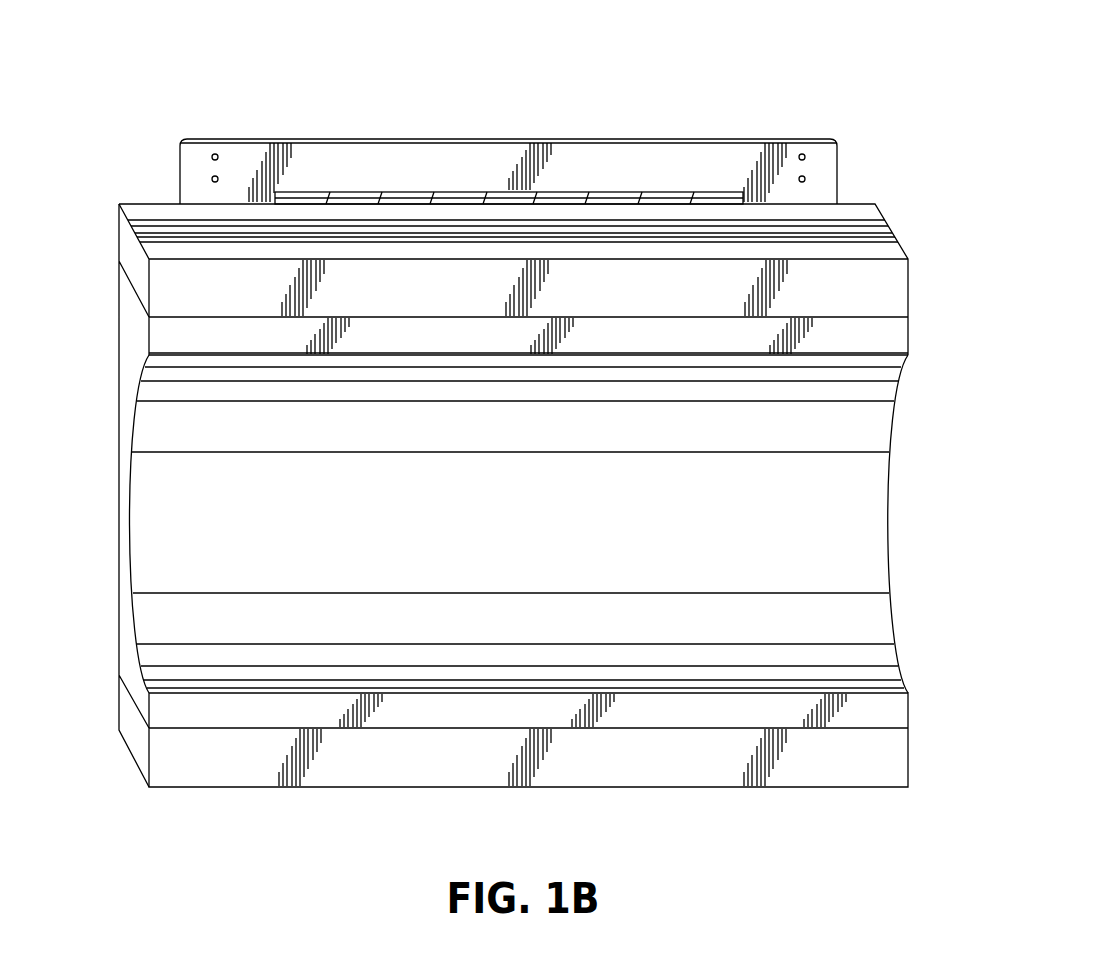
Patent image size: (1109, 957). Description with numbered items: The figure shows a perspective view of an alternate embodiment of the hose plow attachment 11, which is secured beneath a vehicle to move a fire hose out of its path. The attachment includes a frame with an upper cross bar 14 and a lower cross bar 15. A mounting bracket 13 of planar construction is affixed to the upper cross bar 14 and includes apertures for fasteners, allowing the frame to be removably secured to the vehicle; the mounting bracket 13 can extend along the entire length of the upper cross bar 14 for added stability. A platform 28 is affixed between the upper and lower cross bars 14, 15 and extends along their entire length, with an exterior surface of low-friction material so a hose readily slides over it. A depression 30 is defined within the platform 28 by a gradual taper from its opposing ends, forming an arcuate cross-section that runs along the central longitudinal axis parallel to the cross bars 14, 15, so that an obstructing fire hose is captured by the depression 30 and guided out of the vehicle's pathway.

The hose plow attachment 11 is at (654, 96).
The mounting bracket 13 is at (532, 145).
The upper cross bar 14 is at (870, 212).
The lower cross bar 15 is at (904, 762).
The platform 28 is at (135, 337).
The depression 30 is at (885, 498).